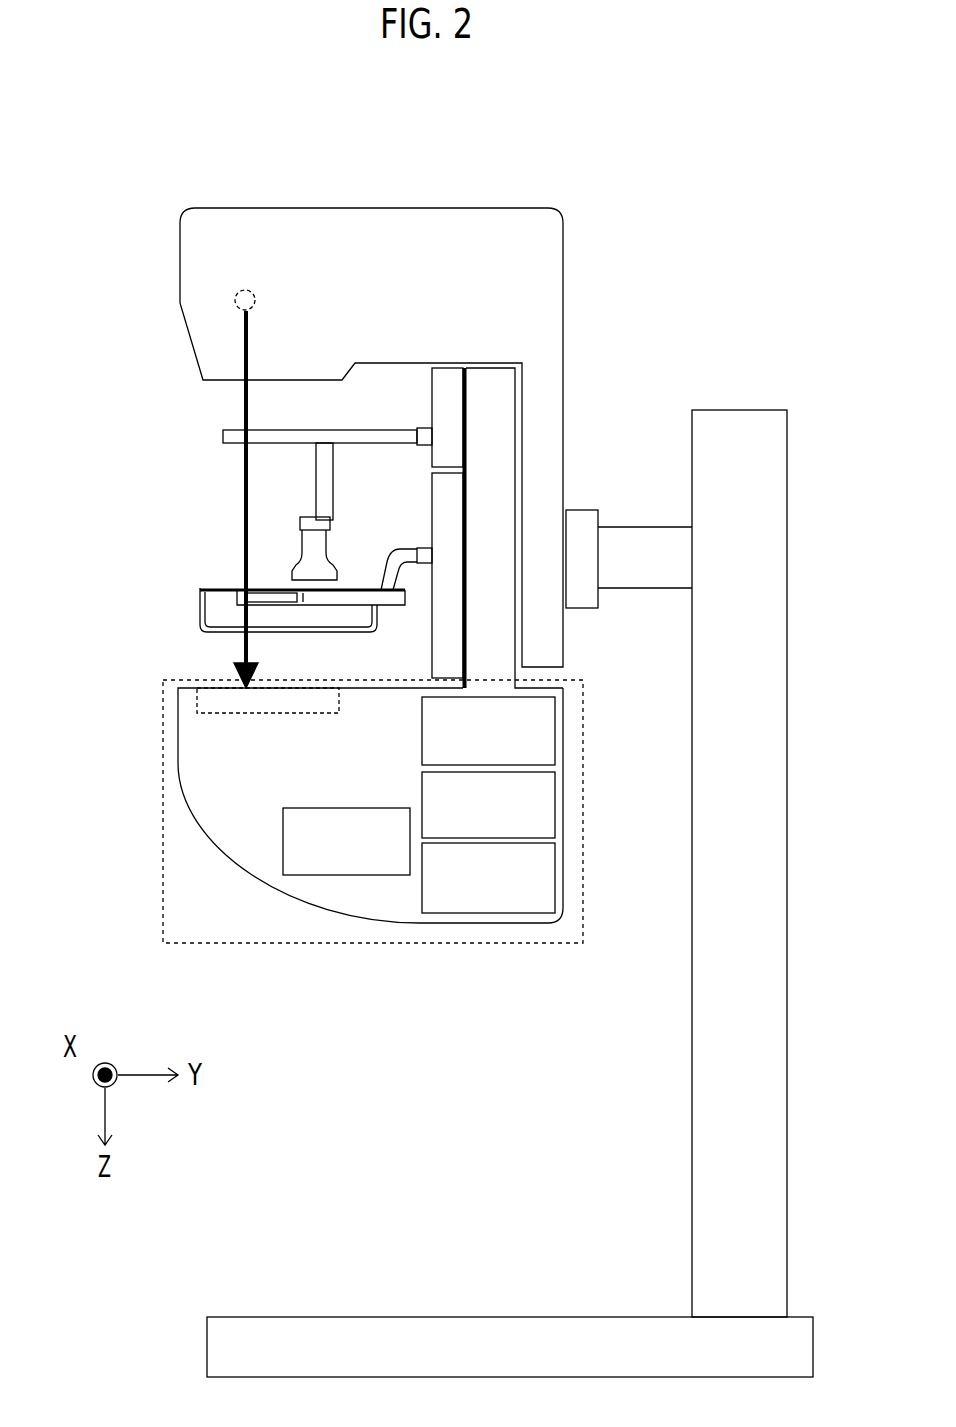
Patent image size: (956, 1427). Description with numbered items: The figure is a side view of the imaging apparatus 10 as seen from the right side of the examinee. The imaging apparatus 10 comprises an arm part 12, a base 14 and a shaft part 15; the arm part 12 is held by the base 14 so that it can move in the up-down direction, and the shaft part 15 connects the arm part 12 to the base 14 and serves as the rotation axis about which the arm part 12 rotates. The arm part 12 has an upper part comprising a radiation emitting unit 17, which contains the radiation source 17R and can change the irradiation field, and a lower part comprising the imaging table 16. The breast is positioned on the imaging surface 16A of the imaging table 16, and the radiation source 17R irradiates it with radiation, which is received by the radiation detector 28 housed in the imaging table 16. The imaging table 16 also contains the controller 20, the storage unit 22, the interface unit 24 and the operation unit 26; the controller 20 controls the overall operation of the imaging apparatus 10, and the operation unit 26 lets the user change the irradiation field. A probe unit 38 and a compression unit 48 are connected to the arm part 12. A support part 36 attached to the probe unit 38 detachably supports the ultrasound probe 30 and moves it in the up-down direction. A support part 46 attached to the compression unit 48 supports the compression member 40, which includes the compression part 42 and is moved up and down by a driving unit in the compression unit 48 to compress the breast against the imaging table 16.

The imaging apparatus 10 is at (727, 133).
The arm part 12 is at (515, 197).
The base 14 is at (737, 410).
The shaft part 15 is at (650, 527).
The imaging table 16 is at (163, 736).
The imaging surface 16A is at (190, 688).
The radiation emitting unit 17 is at (228, 278).
The radiation source 17R is at (235, 301).
The controller 20 is at (555, 731).
The storage unit 22 is at (555, 805).
The interface (I/F) unit 24 is at (555, 880).
The operation unit 26 is at (283, 851).
The radiation detector 28 is at (233, 713).
The ultrasound probe 30 is at (300, 562).
The support part 36 is at (342, 430).
The probe unit 38 is at (432, 390).
The compression member 40 is at (216, 577).
The compression part 42 is at (202, 602).
The support part 46 is at (400, 557).
The compression unit 48 is at (432, 495).